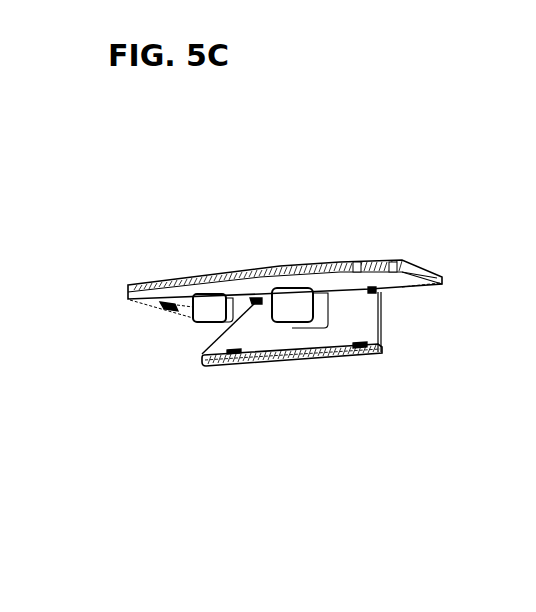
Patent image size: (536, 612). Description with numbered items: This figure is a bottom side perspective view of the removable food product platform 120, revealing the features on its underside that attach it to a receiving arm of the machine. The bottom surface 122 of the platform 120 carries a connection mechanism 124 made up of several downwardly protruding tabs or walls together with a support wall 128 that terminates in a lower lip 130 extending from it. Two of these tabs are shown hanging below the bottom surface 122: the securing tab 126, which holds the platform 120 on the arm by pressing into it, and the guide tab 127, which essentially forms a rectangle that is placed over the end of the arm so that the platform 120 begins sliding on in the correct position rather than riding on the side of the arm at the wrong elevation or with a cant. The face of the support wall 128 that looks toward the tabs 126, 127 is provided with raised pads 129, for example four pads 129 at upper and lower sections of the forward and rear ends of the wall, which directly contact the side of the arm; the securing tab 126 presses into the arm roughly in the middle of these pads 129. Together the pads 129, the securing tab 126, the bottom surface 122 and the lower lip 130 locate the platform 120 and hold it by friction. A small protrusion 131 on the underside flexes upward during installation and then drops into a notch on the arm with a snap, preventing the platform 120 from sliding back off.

The food product platform 120 is at (175, 207).
The bottom surface 122 is at (403, 288).
The connection mechanism 124 is at (171, 402).
The securing tab 126 is at (295, 297).
The guide tab 127 is at (205, 307).
The support wall 128 is at (262, 338).
The pads 129 is at (236, 351).
The lower lip 130 is at (336, 357).
The protrusion 131 is at (166, 305).